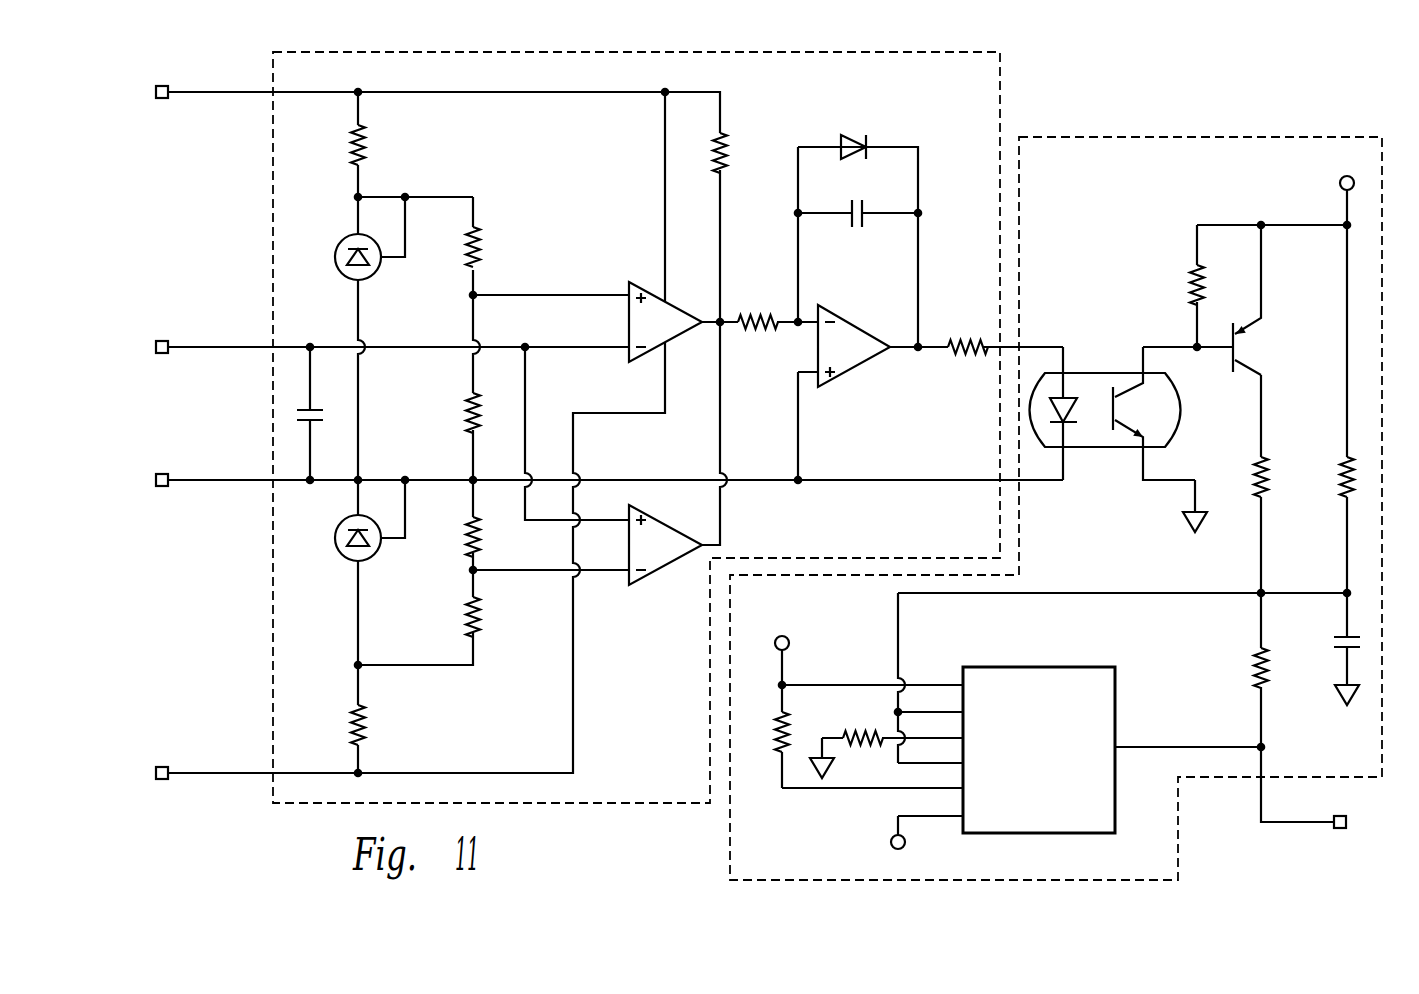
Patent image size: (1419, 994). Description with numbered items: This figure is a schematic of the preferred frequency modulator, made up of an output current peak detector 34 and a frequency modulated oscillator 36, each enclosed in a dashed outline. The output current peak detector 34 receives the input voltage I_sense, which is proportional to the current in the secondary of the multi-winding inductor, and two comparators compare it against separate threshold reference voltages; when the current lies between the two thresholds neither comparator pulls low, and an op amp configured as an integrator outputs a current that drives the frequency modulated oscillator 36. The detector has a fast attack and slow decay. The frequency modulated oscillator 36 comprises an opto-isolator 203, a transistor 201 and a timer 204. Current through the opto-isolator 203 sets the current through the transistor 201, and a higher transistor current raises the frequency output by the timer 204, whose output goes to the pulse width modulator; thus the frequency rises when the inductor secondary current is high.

The output current peak detector 34 is at (1000, 92).
The frequency modulated oscillator 36 is at (1275, 137).
The transistor Q201 201 is at (1269, 300).
The opto-isolator U203 203 is at (1113, 413).
The 555 timer U204 204 is at (1063, 784).